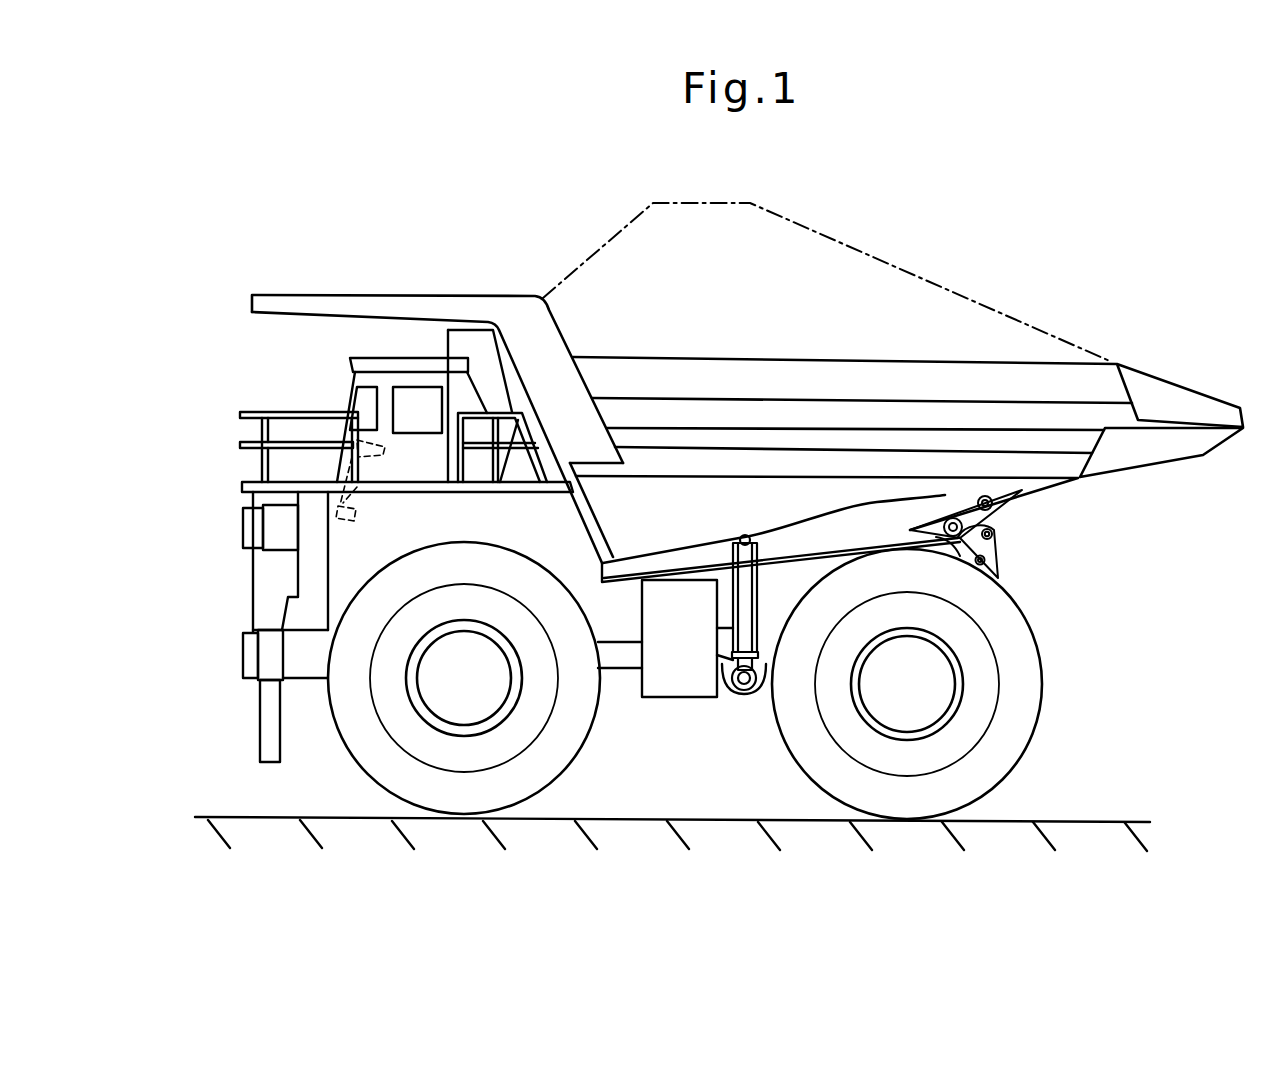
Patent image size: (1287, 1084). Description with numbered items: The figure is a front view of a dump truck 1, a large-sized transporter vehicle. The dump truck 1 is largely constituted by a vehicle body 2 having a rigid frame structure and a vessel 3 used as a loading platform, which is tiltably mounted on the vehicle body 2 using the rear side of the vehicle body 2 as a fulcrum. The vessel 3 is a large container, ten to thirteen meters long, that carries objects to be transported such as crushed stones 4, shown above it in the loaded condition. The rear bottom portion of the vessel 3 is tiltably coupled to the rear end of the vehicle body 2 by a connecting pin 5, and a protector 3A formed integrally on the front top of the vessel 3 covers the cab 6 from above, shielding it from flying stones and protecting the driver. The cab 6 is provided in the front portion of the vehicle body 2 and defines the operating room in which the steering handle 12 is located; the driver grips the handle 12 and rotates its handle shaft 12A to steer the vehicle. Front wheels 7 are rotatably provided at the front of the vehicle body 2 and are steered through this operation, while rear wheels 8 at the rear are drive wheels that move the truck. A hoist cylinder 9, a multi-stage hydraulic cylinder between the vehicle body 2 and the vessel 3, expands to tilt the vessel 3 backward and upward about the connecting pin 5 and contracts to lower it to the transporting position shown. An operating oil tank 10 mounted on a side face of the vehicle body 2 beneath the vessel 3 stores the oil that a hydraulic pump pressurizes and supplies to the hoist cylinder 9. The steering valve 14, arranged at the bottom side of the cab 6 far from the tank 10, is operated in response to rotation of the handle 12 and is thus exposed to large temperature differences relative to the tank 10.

The dump truck 1 is at (533, 260).
The vehicle body 2 is at (622, 625).
The vessel 3 is at (930, 372).
The protector 3A is at (375, 298).
The crushed stones 4 is at (813, 227).
The connecting pin 5 is at (993, 512).
The cab 6 is at (355, 376).
The front wheels 7 is at (373, 750).
The rear wheels 8 is at (1033, 690).
The hoist cylinder 9 is at (740, 635).
The operating oil tank 10 is at (680, 690).
The steering handle 12 is at (347, 433).
The handle shaft 12A is at (348, 480).
The steering valve 14 is at (335, 515).